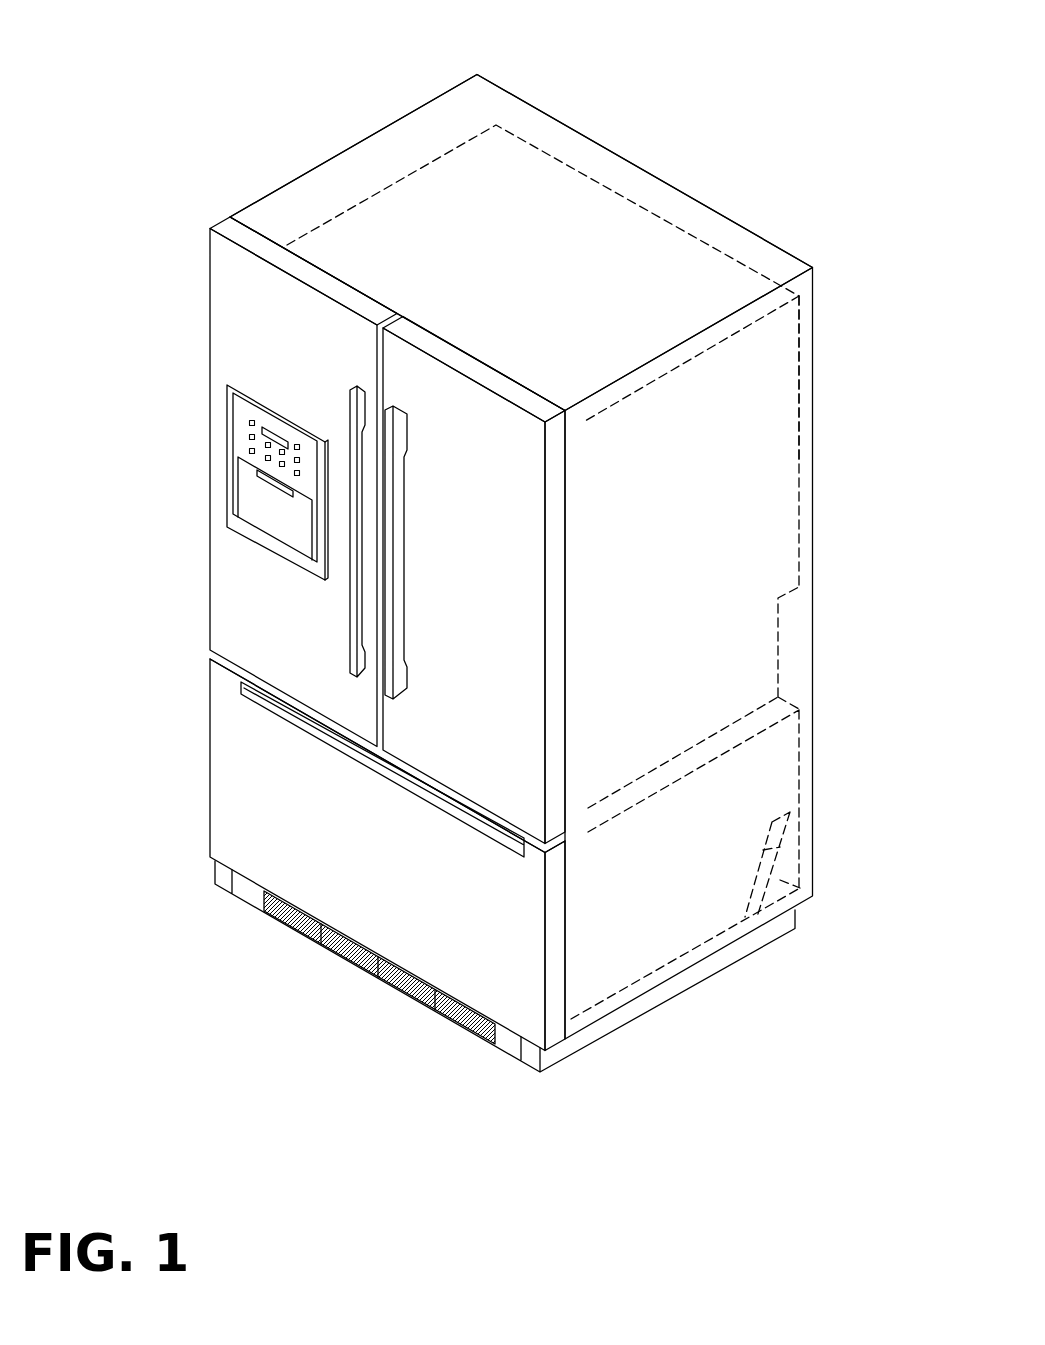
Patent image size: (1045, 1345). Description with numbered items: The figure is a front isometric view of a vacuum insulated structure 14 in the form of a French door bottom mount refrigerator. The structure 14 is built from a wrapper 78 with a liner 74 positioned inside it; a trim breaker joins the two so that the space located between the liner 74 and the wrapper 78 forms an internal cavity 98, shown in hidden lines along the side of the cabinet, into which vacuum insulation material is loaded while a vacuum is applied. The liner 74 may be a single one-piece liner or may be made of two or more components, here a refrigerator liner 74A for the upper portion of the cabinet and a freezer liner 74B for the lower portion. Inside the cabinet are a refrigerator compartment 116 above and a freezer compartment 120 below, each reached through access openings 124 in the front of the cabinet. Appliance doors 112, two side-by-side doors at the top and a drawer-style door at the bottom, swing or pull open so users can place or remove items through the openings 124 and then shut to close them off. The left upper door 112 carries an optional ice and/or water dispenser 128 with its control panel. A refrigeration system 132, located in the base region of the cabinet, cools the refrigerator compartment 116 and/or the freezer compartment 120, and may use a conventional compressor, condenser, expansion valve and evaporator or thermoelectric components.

The vacuum insulated structure 14 is at (292, 116).
The wrapper 78 is at (738, 223).
The access openings 124 is at (258, 235).
The appliance doors 112 is at (237, 595).
The ice and/or water dispenser 128 is at (237, 465).
The refrigerator compartment 116 is at (722, 419).
The refrigerator liner 74A is at (800, 446).
The internal cavity 98 is at (794, 619).
The liner 74 is at (780, 633).
The freezer compartment 120 is at (718, 815).
The freezer liner 74B is at (800, 847).
The refrigeration system 132 is at (815, 899).